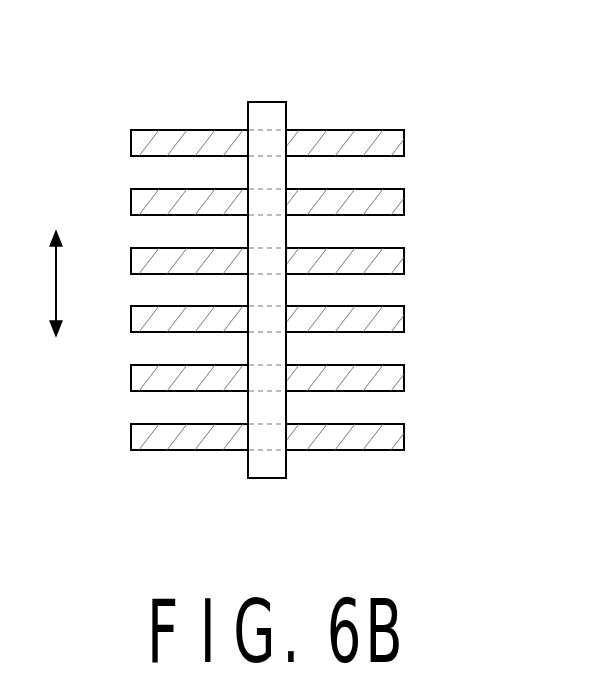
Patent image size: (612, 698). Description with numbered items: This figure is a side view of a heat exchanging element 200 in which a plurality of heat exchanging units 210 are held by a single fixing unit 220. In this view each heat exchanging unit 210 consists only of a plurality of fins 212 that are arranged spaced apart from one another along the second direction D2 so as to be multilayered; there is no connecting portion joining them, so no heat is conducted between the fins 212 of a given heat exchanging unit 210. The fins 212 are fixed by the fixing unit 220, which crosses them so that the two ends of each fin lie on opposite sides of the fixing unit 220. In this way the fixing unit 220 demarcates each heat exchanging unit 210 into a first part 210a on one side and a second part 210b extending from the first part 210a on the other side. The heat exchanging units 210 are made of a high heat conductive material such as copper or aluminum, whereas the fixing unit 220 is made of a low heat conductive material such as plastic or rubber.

The heat exchanging element 200 is at (302, 253).
The heat exchanging unit 210 is at (302, 239).
The first part 210a is at (167, 108).
The second part 210b is at (376, 118).
The fin 212 is at (137, 143).
The fixing unit 220 is at (267, 108).
The second direction D2 is at (36, 283).